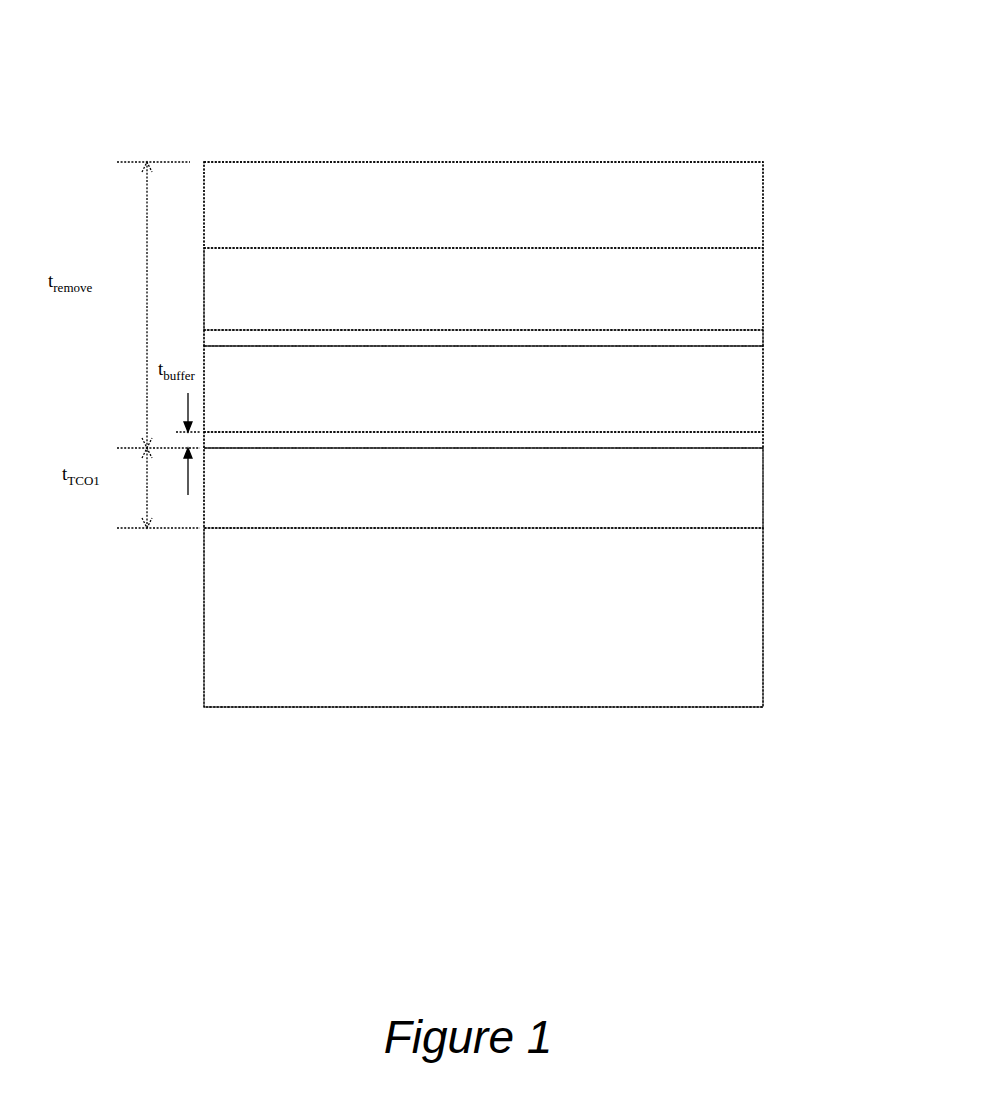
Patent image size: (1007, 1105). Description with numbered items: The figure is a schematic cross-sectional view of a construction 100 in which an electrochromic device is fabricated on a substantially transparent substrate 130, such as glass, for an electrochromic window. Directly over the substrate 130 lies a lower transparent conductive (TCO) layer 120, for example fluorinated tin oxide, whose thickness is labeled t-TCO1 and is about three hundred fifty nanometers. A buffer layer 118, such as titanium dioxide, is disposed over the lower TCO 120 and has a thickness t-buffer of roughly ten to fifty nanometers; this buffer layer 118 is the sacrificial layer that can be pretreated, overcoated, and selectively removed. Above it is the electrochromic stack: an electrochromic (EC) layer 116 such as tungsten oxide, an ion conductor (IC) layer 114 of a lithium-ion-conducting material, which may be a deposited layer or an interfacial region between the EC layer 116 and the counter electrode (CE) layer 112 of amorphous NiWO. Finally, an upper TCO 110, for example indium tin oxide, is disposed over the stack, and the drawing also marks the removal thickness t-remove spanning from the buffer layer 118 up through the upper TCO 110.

The construction 100 is at (476, 90).
The upper TCO 110 is at (748, 206).
The counter electrode (CE) layer 112 is at (756, 288).
The ion conductor (IC) layer 114 is at (760, 340).
The electrochromic (EC) layer 116 is at (754, 388).
The buffer layer 118 is at (756, 440).
The lower transparent conductive (TCO) layer 120 is at (758, 486).
The substrate 130 is at (757, 613).